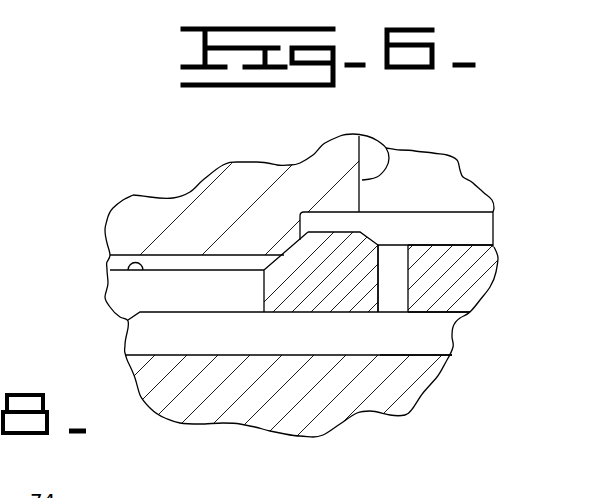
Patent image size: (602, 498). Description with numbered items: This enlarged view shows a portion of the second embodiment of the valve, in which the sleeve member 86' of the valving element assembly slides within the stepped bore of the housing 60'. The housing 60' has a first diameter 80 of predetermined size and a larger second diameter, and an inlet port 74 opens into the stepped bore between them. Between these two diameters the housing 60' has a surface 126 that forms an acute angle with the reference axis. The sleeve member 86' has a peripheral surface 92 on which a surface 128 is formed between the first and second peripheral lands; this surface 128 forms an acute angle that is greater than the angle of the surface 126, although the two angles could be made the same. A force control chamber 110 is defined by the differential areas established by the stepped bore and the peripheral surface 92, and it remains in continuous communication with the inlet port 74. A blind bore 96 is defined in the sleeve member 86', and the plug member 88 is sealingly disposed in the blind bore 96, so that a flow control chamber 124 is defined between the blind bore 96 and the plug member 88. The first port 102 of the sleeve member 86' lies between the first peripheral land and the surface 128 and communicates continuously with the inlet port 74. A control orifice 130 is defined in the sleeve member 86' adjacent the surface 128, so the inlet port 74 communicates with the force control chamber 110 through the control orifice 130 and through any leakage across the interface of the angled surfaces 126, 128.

The housing 60' is at (229, 185).
The inlet port 74 is at (388, 147).
The first diameter 80 is at (118, 257).
The sleeve member 86' is at (438, 268).
The peripheral surface 92 is at (130, 264).
The force control chamber 110 is at (325, 218).
The flow control chamber 124 is at (407, 337).
The surface 126 is at (293, 254).
The surface 128 is at (292, 259).
The control orifice 130 is at (378, 288).
The plug member 88 is at (185, 410).
The blind bore 96 is at (320, 313).
The first port 102 is at (264, 294).